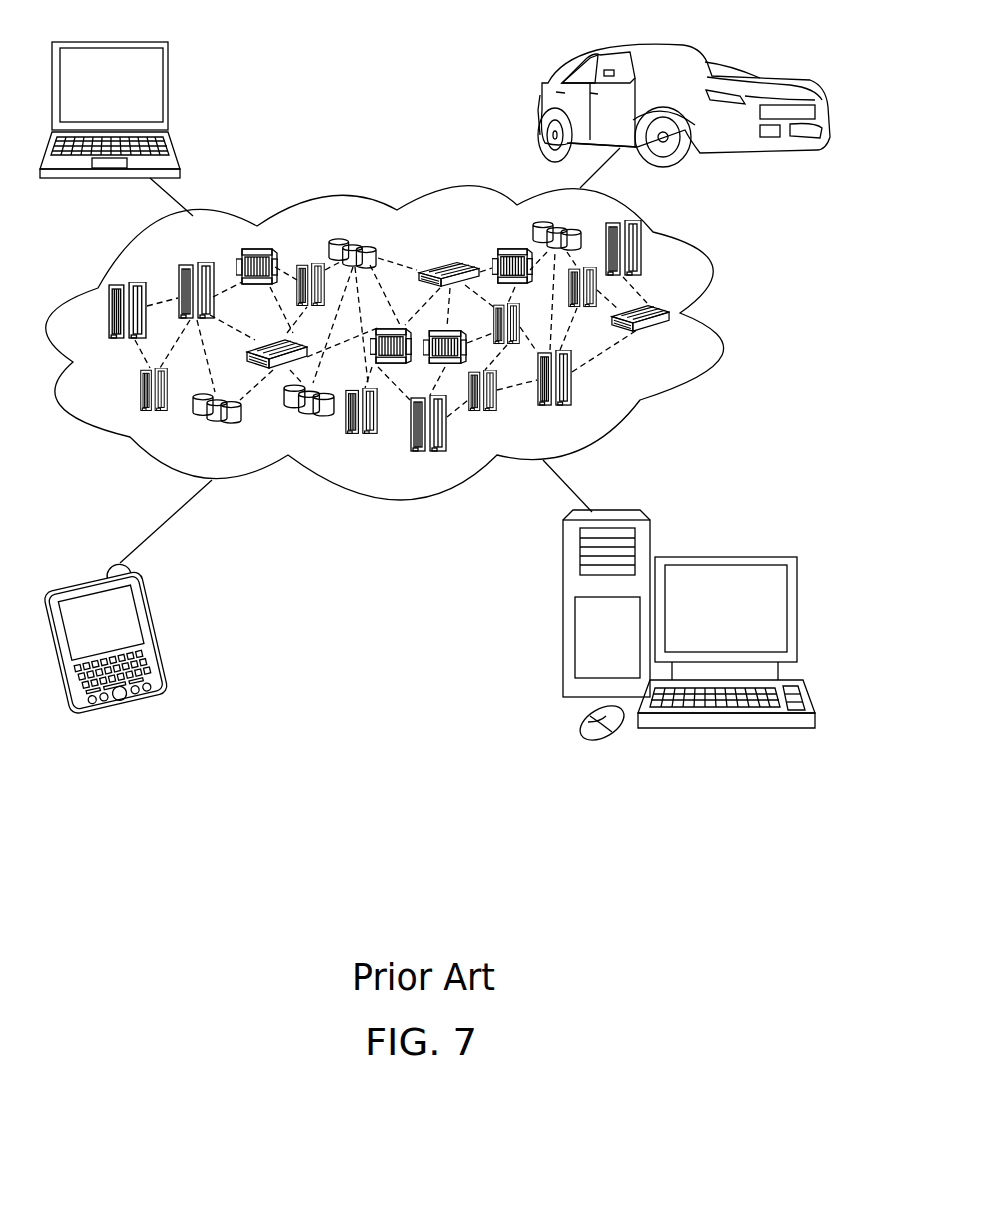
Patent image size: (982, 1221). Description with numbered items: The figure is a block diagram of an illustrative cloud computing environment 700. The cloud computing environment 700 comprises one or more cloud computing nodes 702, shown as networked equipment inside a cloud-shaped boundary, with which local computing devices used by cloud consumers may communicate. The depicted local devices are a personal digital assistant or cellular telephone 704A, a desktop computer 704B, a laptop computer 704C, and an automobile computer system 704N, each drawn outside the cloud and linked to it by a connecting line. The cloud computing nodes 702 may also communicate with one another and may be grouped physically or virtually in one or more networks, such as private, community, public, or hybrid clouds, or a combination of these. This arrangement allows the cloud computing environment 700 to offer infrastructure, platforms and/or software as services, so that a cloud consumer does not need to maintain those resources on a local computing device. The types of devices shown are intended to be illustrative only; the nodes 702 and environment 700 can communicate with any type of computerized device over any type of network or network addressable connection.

The cloud computing environment 700 is at (706, 307).
The cloud computing nodes 702 is at (676, 346).
The personal digital assistant (PDA) or cellular telephone 704A is at (148, 608).
The desktop computer 704B is at (713, 557).
The laptop computer 704C is at (168, 72).
The automobile computer system 704N is at (541, 107).